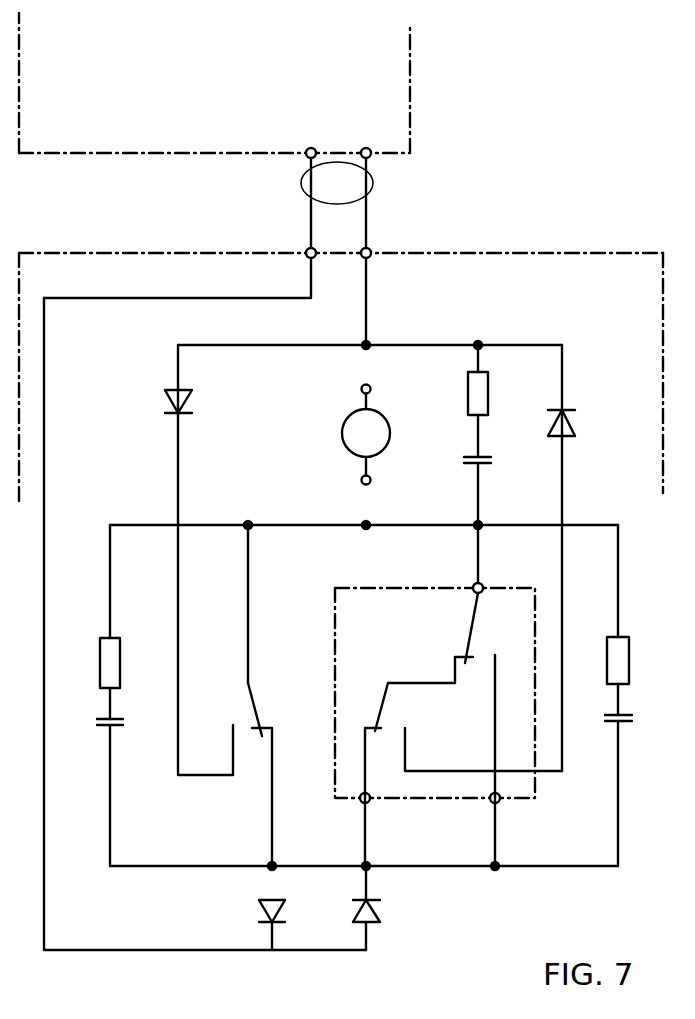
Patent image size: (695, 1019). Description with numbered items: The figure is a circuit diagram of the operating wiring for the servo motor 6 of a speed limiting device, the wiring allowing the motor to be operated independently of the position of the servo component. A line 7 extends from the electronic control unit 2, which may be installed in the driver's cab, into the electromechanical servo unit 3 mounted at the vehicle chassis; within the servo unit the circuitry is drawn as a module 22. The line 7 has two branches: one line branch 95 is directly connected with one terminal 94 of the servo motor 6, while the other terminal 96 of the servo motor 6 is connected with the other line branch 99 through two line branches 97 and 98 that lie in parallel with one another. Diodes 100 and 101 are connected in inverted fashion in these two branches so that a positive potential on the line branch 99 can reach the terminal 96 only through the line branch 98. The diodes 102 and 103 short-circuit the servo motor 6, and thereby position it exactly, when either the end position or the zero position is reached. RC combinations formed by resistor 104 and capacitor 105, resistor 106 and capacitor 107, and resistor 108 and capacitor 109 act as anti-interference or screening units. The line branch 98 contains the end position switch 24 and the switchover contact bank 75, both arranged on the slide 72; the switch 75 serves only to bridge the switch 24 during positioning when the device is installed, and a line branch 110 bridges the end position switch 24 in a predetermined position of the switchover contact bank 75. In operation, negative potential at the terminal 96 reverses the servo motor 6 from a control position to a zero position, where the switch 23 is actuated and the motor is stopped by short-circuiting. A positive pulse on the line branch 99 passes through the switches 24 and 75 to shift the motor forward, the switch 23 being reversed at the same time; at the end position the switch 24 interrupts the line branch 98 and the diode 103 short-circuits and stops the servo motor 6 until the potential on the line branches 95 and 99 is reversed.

The electronic control unit 2 is at (231, 84).
The electromechanical servo unit 3 is at (553, 253).
The servo motor 6 is at (374, 446).
The line 7 is at (374, 181).
The control circuit module 22 is at (108, 432).
The switch 23 is at (259, 706).
The end position switch 24 is at (388, 700).
The slide 72 is at (335, 632).
The switchover contact bank 75 is at (468, 628).
The terminal 94 is at (361, 389).
The line branch 95 is at (370, 220).
The terminal 96 is at (361, 482).
The line branch 97 is at (250, 642).
The line branch 98 is at (407, 683).
The line branch 99 is at (308, 224).
The diode 100 is at (264, 909).
The diode 101 is at (381, 914).
The diode 102 is at (172, 398).
The diode 103 is at (566, 434).
The resistor of RC combination 104 is at (105, 654).
The capacitor of RC combination 105 is at (102, 738).
The resistor of RC combination 106 is at (488, 396).
The capacitor of RC combination 107 is at (482, 466).
The resistor of RC combination 108 is at (621, 652).
The capacitor of RC combination 109 is at (622, 727).
The line branch 110 is at (494, 733).